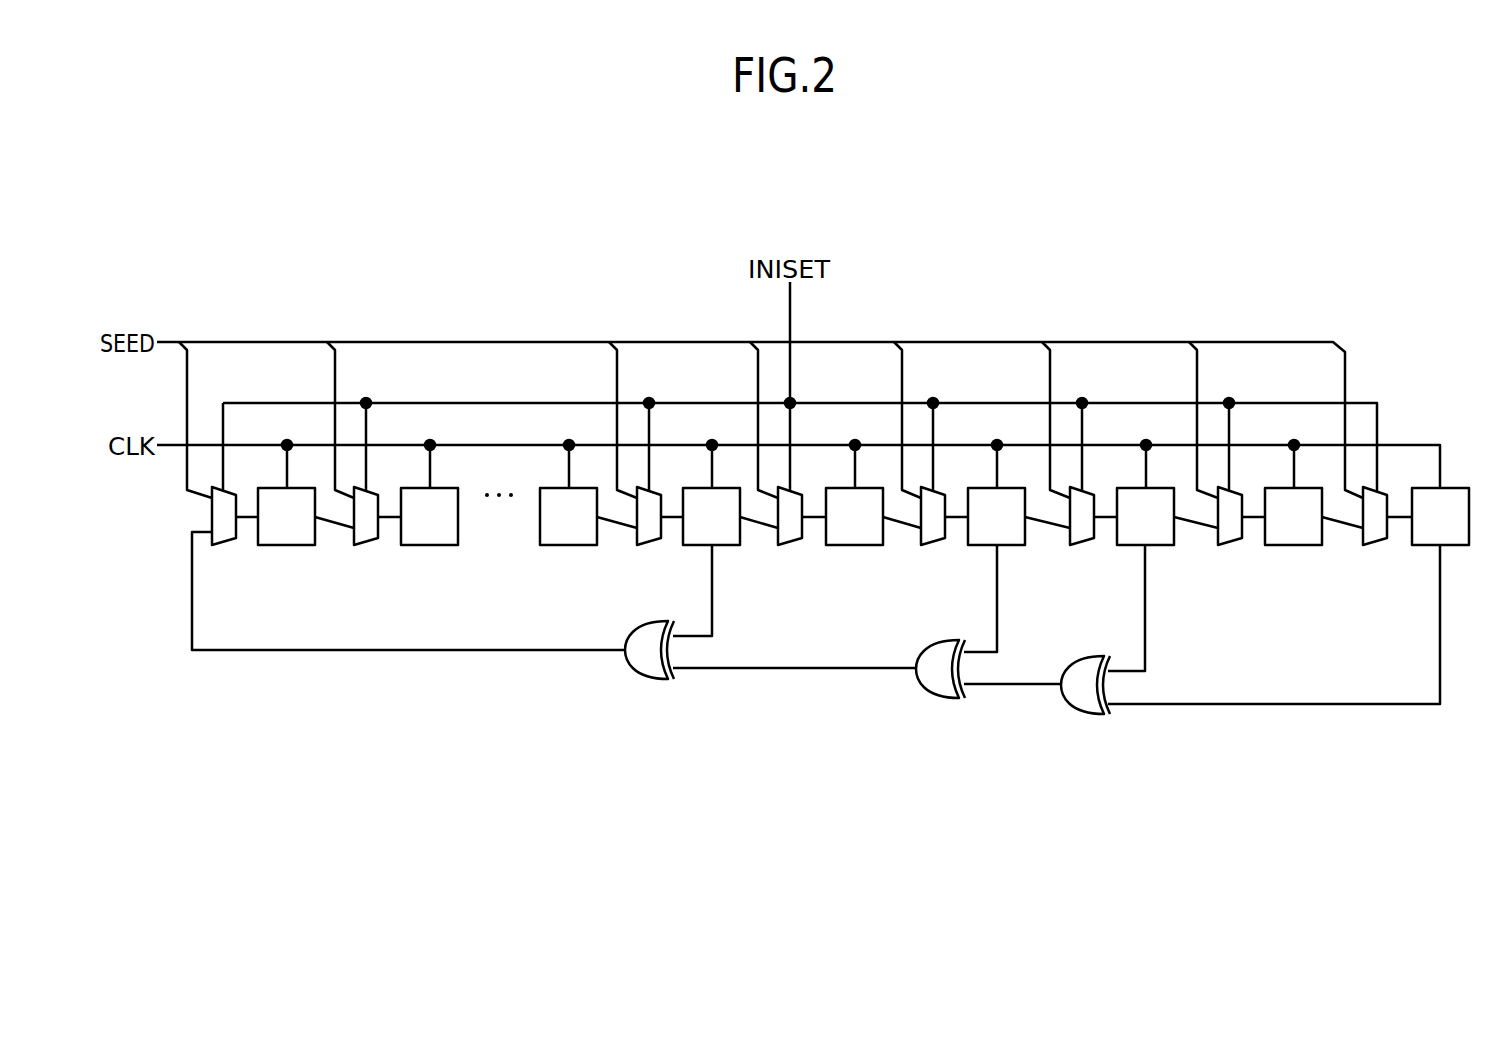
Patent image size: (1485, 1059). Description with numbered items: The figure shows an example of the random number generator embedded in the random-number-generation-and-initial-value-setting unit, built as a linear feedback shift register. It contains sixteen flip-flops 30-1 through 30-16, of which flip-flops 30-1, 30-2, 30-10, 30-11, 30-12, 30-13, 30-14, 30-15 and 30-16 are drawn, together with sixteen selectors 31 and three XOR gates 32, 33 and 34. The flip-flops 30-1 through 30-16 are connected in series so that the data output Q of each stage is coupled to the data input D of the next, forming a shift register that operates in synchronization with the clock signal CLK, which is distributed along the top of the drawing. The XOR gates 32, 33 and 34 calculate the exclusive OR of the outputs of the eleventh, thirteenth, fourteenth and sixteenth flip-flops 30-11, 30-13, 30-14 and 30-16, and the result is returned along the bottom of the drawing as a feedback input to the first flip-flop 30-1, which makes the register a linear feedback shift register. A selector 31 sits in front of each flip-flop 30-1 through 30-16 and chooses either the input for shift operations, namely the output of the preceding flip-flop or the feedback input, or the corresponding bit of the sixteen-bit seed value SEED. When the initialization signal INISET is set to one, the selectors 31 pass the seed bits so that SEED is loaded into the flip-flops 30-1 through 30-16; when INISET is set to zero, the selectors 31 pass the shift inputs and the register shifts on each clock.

The selector 31 is at (225, 546).
The flip-flop 30-1 is at (288, 546).
The flip-flop 30-2 is at (431, 546).
The flip-flop 30-10 is at (570, 546).
The flip-flop 30-11 is at (730, 546).
The flip-flop 30-12 is at (856, 546).
The flip-flop 30-13 is at (1013, 546).
The flip-flop 30-14 is at (1159, 546).
The flip-flop 30-15 is at (1295, 546).
The flip-flop 30-16 is at (1423, 546).
The XOR gate 32 is at (1085, 716).
The XOR gate 33 is at (942, 700).
The XOR gate 34 is at (655, 681).